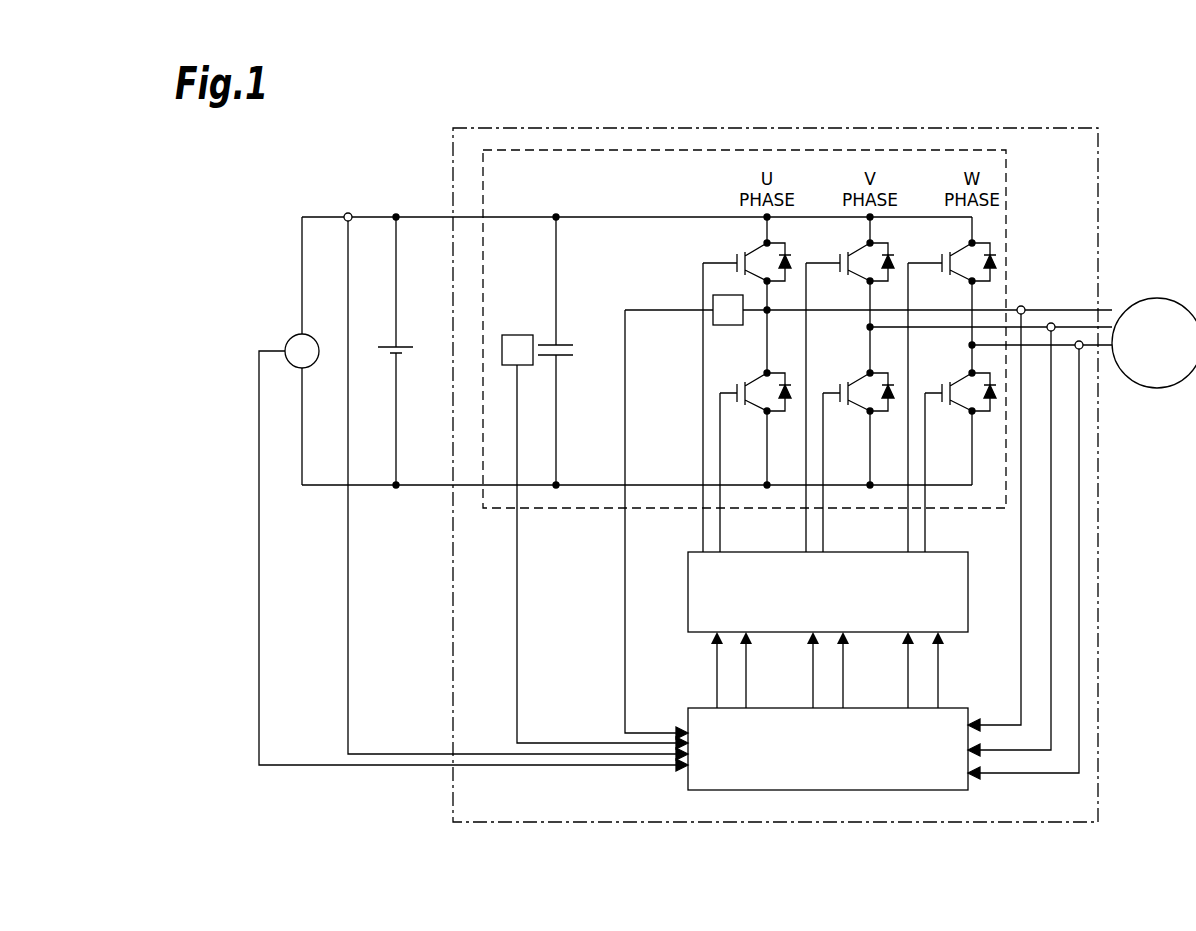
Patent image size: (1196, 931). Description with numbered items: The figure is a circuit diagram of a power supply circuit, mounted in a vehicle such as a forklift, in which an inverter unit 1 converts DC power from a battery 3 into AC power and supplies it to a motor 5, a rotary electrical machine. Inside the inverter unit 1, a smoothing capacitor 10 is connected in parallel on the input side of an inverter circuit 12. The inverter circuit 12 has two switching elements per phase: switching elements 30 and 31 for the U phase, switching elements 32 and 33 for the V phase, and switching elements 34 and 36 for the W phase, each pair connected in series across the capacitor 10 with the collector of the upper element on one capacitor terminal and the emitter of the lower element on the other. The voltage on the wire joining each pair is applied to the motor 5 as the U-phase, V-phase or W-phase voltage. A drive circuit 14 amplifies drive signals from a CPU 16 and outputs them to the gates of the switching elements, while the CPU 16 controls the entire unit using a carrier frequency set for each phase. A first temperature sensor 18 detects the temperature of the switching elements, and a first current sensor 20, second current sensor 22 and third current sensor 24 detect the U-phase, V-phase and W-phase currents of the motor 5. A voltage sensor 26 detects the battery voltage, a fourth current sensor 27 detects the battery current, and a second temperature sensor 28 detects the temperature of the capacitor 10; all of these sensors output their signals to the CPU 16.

The inverter unit 1 is at (1028, 128).
The battery 3 is at (400, 345).
The motor 5 is at (1157, 298).
The capacitor 10 is at (565, 345).
The inverter circuit 12 is at (1008, 190).
The drive circuit 14 is at (688, 595).
The CPU 16 is at (688, 778).
The first temperature sensor 18 is at (713, 300).
The first current sensor 20 is at (1022, 306).
The second current sensor 22 is at (1052, 323).
The third current sensor 24 is at (1080, 341).
The voltage sensor 26 is at (298, 334).
The fourth current sensor 27 is at (350, 212).
The second temperature sensor 28 is at (515, 335).
The switching element 30 is at (757, 251).
The switching element 31 is at (757, 378).
The switching element 32 is at (860, 251).
The switching element 33 is at (860, 378).
The switching element 34 is at (962, 251).
The switching element 36 is at (962, 378).